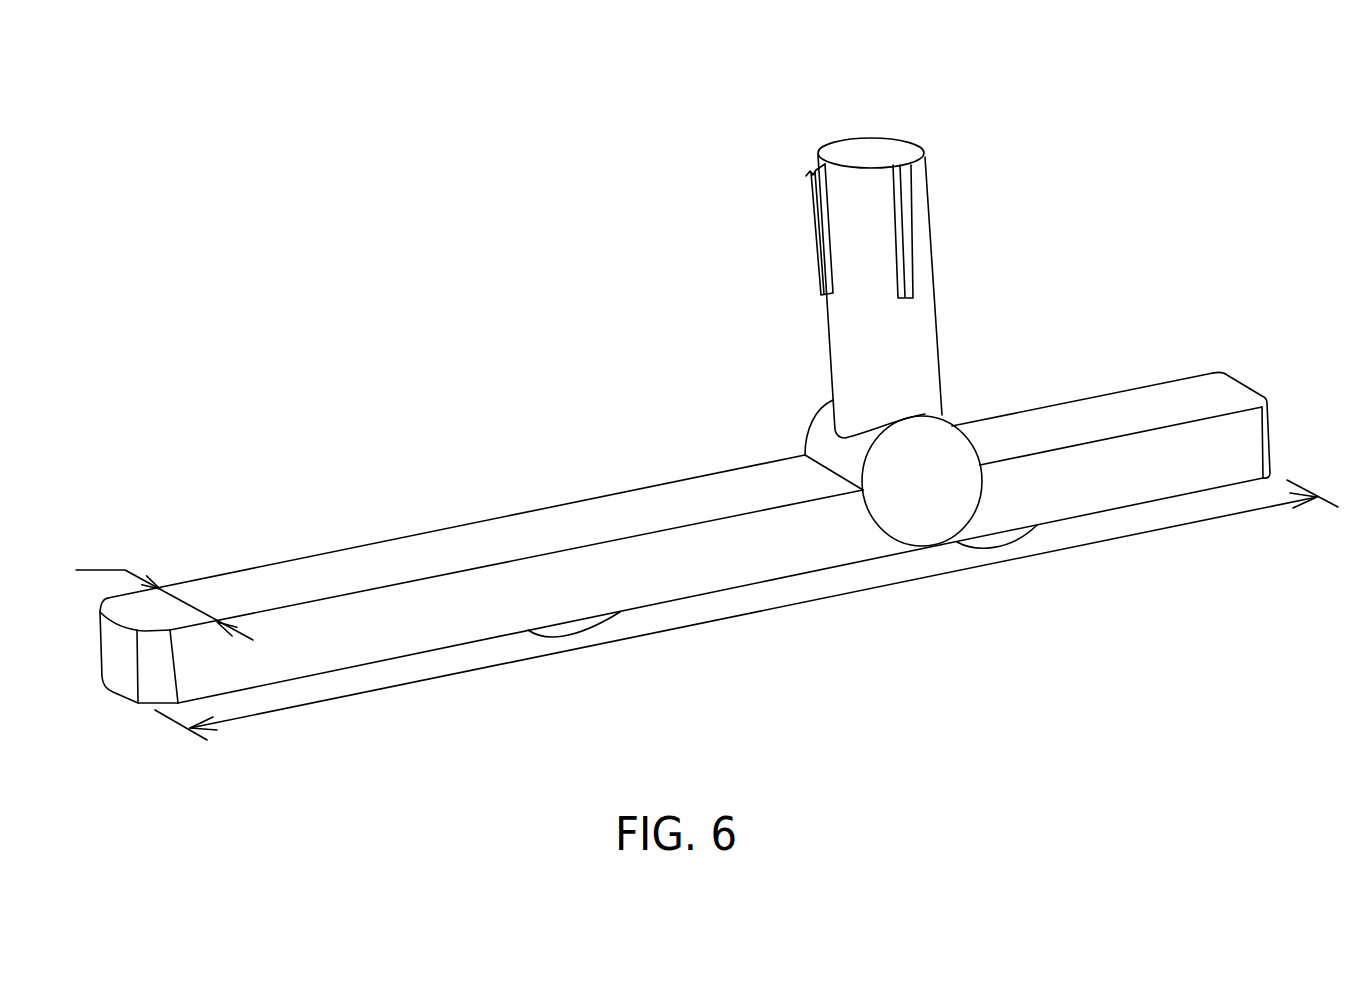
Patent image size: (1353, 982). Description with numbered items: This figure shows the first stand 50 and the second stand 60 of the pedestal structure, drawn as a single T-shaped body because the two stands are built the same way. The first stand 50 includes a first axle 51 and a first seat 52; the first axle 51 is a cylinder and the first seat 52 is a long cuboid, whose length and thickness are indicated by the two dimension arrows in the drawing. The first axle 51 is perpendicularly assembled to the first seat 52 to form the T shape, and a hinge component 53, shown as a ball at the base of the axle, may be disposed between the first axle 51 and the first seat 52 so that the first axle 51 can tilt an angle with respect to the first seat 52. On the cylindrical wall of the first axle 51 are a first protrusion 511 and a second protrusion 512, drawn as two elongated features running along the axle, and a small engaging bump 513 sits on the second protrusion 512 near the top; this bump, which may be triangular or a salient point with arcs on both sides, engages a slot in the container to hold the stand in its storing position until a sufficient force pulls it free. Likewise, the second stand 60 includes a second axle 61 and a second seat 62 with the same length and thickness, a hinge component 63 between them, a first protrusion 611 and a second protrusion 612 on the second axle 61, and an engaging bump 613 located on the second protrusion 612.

The first stand 50 is at (707, 396).
The second stand 60 is at (707, 396).
The first axle 51 is at (851, 291).
The second axle 61 is at (851, 291).
The first protrusion 511 is at (996, 231).
The first protrusion 611 is at (900, 200).
The second protrusion 512 is at (717, 211).
The second protrusion 612 is at (717, 211).
The engaging bump 513 is at (713, 152).
The engaging bump 613 is at (804, 177).
The first seat 52 is at (685, 537).
The second seat 62 is at (385, 603).
The hinge component 53 is at (952, 411).
The hinge component 63 is at (950, 470).